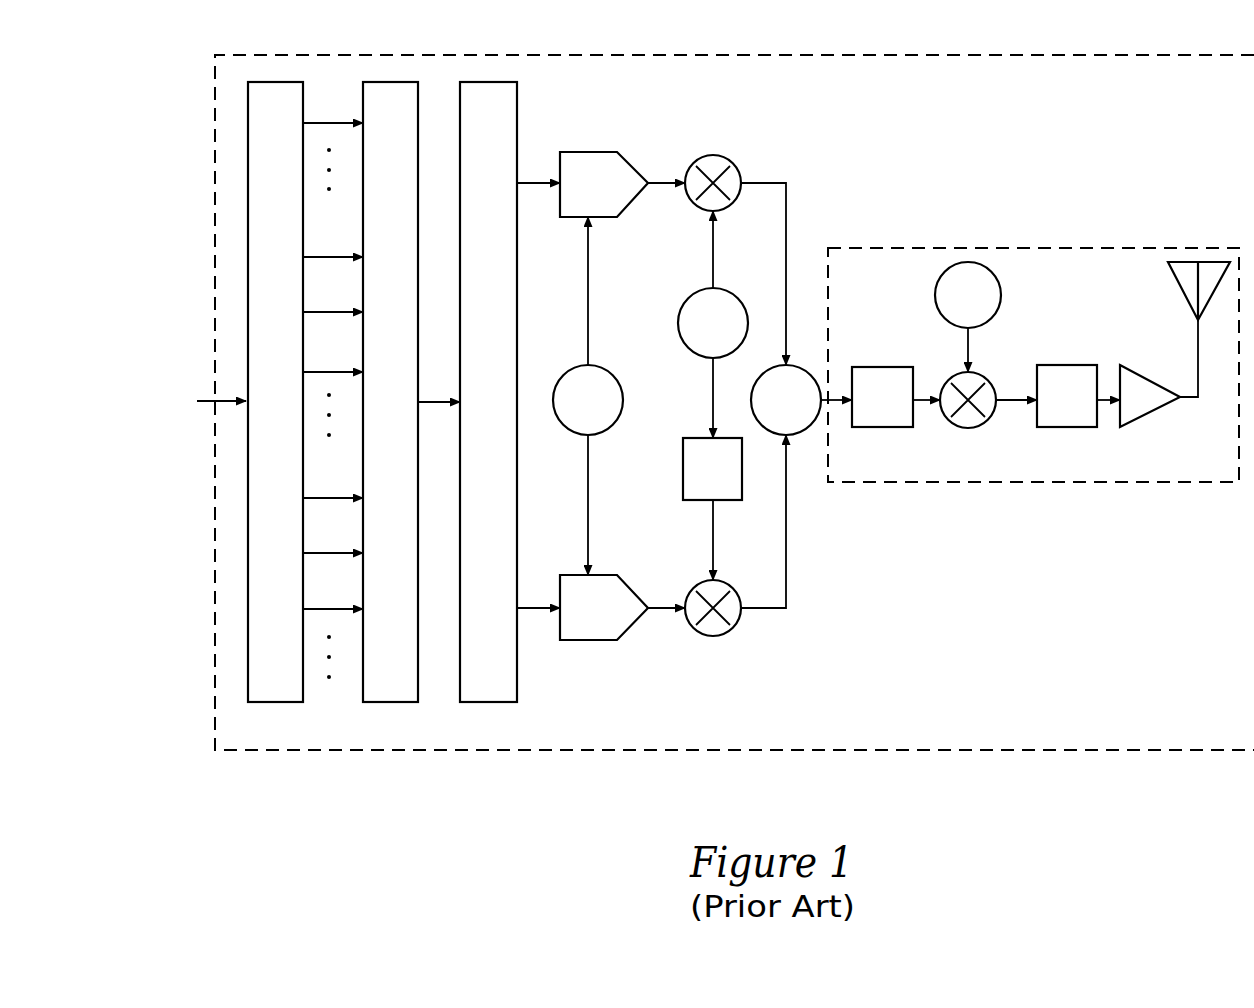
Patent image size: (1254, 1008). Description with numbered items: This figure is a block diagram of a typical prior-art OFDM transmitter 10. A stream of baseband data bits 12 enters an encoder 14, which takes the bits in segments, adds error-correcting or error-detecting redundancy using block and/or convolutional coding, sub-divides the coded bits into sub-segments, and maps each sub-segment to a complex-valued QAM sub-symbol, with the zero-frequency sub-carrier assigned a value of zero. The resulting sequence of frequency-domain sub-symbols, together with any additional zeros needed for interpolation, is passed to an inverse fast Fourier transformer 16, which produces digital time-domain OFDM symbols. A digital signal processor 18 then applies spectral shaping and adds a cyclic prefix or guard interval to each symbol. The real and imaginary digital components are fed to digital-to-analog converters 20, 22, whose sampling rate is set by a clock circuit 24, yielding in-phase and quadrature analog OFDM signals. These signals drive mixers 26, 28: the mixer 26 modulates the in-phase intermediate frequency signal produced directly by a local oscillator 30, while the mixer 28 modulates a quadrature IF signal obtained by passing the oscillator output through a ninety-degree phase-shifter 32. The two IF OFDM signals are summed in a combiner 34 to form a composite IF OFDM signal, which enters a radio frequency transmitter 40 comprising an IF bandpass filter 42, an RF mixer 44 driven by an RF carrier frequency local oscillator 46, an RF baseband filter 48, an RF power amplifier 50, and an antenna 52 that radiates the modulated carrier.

The OFDM transmitter 10 is at (948, 750).
The baseband data bits 12 is at (135, 458).
The encoder 14 is at (268, 702).
The inverse fast Fourier transformer 16 is at (382, 702).
The digital signal processor 18 is at (478, 702).
The digital-to-analog converter 20 is at (590, 152).
The digital-to-analog converter 22 is at (597, 640).
The clock circuit 24 is at (611, 375).
The mixer 26 is at (712, 155).
The mixer 28 is at (715, 637).
The local oscillator 30 is at (748, 323).
The 90° phase-shifter 32 is at (742, 470).
The combiner 34 is at (805, 425).
The radio frequency transmitter 40 is at (1032, 482).
The IF bandpass filter 42 is at (873, 427).
The RF mixer 44 is at (965, 428).
The RF carrier frequency local oscillator 46 is at (1001, 290).
The RF baseband filter 48 is at (1072, 427).
The RF power amplifier 50 is at (1138, 418).
The antenna 52 is at (1180, 290).